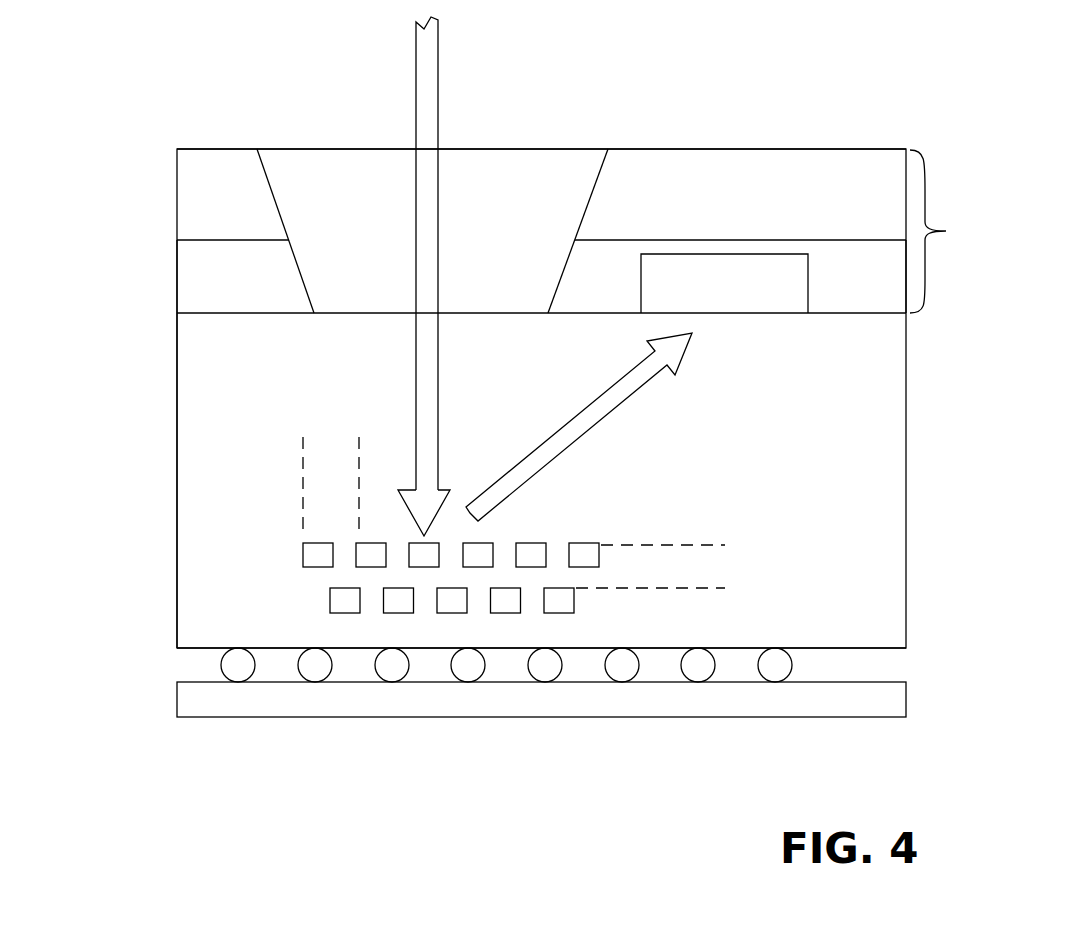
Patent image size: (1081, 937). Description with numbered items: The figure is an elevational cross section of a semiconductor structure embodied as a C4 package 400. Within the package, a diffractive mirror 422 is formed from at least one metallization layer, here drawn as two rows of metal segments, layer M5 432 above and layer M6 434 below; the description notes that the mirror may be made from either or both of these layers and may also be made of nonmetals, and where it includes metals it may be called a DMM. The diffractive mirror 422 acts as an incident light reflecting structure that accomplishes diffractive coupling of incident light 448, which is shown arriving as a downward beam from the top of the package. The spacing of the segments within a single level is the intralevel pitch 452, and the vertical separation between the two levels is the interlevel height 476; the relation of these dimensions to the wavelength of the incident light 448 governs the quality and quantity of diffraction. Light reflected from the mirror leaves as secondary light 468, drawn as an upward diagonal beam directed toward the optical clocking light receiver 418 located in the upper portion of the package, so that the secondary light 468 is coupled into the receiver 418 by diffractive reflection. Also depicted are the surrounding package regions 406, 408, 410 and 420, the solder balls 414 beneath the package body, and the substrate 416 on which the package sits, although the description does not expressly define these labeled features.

The C4 package 400 is at (1060, 194).
The top layer 406 is at (202, 148).
The dielectric material 408 is at (243, 211).
The conductive region 410 is at (243, 288).
The solder balls 414 is at (895, 664).
The substrate 416 is at (618, 703).
The optical clocking light receiver 418 is at (747, 293).
The upper region / light 420 is at (547, 33).
The diffractive mirror 422 is at (363, 638).
The layer M5 432 is at (290, 554).
The layer M6 434 is at (317, 607).
The incident light 448 is at (422, 78).
The intralevel pitch 452 is at (396, 463).
The secondary light 468 is at (573, 425).
The interlevel height 476 is at (688, 502).